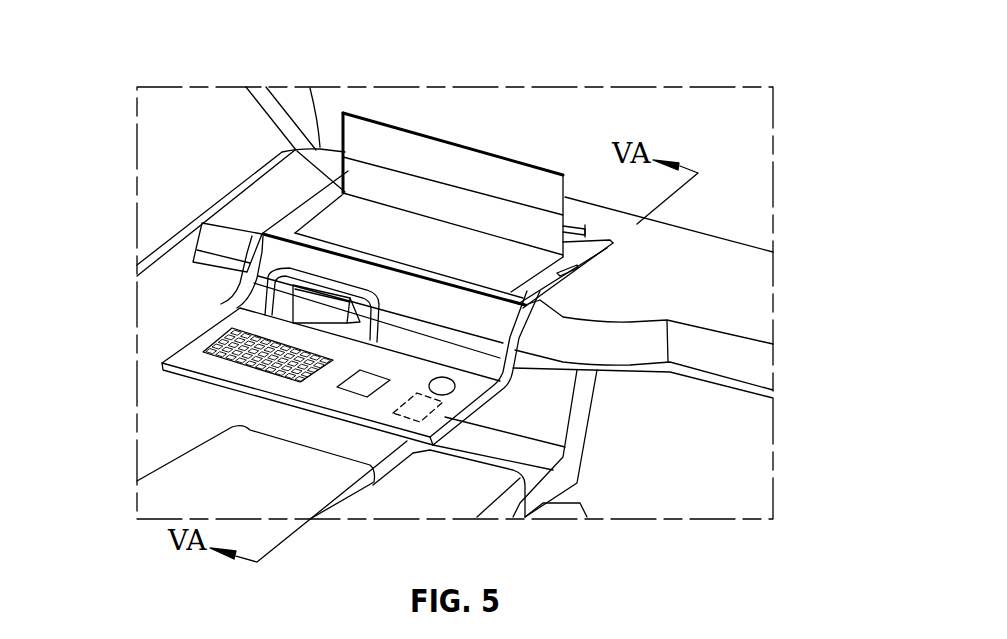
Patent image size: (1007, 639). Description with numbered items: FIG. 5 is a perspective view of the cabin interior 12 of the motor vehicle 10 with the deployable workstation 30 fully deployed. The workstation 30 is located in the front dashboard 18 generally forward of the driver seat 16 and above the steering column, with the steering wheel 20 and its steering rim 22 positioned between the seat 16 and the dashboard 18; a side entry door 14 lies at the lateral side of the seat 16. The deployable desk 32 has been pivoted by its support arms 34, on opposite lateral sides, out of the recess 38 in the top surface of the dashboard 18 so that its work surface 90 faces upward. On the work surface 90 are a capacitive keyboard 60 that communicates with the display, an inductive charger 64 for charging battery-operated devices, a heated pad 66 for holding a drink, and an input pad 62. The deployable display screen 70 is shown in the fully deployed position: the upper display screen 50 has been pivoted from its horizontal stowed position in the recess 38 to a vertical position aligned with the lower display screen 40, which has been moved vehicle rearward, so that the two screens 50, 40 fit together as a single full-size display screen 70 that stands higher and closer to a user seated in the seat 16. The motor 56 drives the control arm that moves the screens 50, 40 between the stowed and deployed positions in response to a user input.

The motor vehicle 10 is at (256, 80).
The cabin interior 12 is at (690, 437).
The side entry doors 14 is at (165, 252).
The driver seat 16 is at (183, 467).
The front dashboard 18 is at (673, 250).
The steering wheel 20 is at (240, 302).
The steering rim 22 is at (263, 233).
The deployable workstation 30 is at (479, 118).
The deployable desk 32 is at (152, 374).
The support arms 34 is at (178, 336).
The recess 38 is at (312, 230).
The lower display screen 40 is at (397, 178).
The upper display screen 50 is at (363, 147).
The motor 56 is at (569, 240).
The keyboard 60 is at (277, 373).
The touch pad 62 is at (360, 393).
The inductive charger 64 is at (423, 411).
The heated pad 66 is at (513, 372).
The deployable display screen 70 is at (551, 150).
The work surface 90 is at (223, 318).